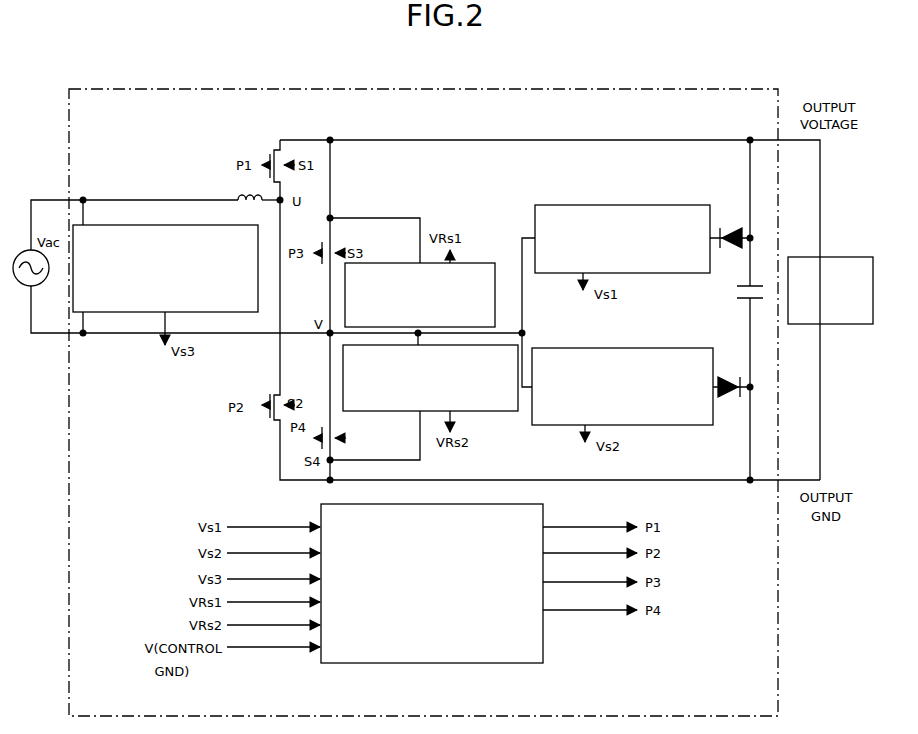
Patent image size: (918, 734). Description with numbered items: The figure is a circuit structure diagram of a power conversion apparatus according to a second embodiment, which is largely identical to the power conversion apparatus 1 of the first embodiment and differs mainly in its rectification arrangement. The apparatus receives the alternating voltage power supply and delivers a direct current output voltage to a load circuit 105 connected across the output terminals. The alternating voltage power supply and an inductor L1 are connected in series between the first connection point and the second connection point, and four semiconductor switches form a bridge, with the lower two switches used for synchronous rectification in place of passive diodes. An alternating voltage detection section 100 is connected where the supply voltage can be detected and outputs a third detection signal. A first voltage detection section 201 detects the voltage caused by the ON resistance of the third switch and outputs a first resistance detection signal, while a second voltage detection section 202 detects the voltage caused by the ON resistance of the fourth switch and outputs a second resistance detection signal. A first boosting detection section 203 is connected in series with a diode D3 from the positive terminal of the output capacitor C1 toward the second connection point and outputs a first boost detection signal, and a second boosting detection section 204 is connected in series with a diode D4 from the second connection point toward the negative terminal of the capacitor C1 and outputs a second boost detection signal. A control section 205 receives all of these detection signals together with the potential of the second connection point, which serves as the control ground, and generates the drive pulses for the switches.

The power conversion apparatus 1 is at (580, 90).
The alternating voltage detection section 100 is at (143, 225).
The first voltage detection section 201 is at (486, 263).
The second voltage detection section 202 is at (500, 411).
The first boosting detection section 203 is at (645, 205).
The second boosting detection section 204 is at (562, 425).
The control section 205 is at (546, 514).
The load circuit 105 is at (823, 257).
The inductor L1 is at (250, 189).
The capacitor C1 is at (755, 310).
The diode D3 is at (730, 229).
The diode D4 is at (731, 378).